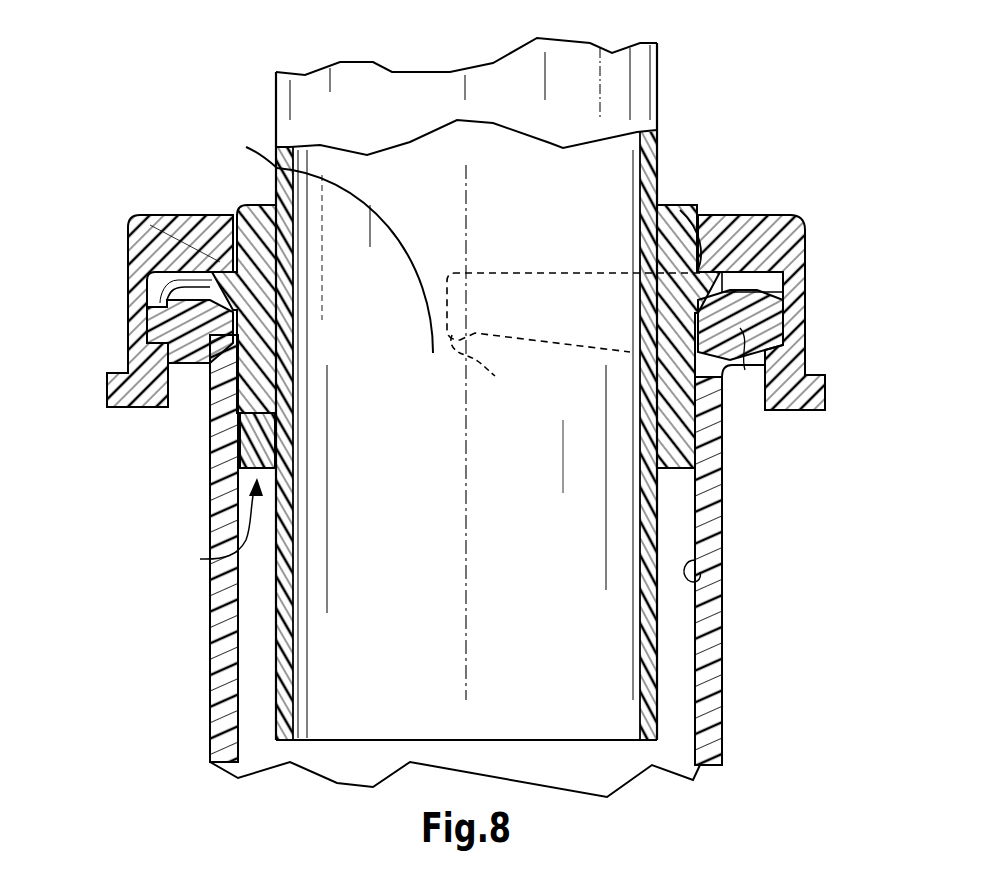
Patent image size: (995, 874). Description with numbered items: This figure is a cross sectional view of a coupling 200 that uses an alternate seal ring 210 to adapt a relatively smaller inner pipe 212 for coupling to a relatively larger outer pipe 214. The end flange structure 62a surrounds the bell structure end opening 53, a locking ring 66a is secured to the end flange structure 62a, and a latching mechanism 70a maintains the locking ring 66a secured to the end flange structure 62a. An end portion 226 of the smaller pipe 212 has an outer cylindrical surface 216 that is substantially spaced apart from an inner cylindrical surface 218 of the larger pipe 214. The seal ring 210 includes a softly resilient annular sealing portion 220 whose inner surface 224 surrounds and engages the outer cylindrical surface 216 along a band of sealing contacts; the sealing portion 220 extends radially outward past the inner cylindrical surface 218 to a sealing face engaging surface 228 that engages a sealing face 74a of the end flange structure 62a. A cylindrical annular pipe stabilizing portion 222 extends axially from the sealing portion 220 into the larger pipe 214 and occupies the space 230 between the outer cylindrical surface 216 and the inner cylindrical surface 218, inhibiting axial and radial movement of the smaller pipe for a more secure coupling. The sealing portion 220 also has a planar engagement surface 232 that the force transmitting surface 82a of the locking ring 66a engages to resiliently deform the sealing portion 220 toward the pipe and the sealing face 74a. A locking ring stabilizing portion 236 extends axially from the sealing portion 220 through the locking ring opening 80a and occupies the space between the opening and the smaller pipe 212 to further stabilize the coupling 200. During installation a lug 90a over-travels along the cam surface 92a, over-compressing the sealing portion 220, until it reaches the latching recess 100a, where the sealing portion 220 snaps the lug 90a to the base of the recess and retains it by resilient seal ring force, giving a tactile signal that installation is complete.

The coupling 200 is at (460, 47).
The end portion 226 is at (320, 239).
The locking ring opening 80a is at (241, 208).
The planar engagement surface 232 is at (213, 246).
The annular sealing portion 220 is at (128, 290).
The lug 90a is at (128, 325).
The sealing face engaging surface 228 is at (150, 332).
The annular pipe stabilizing portion 222 is at (245, 432).
The space 230 is at (208, 524).
The larger outer pipe 214 is at (226, 628).
The smaller inner pipe 212 is at (248, 690).
The inner surface 224 is at (294, 298).
The bell structure end opening 53 is at (295, 405).
The cam surface 92a is at (540, 332).
The latching recess 100a is at (501, 366).
The seal ring 210 is at (682, 190).
The locking ring stabilizing portion 236 is at (683, 218).
The sealing face 74a is at (722, 245).
The force transmitting surface 82a is at (802, 245).
The locking ring 66a is at (806, 256).
The latching mechanism 70a is at (800, 307).
The end flange structure 62a is at (740, 332).
The inner cylindrical surface 218 is at (695, 560).
The outer cylindrical surface 216 is at (658, 623).